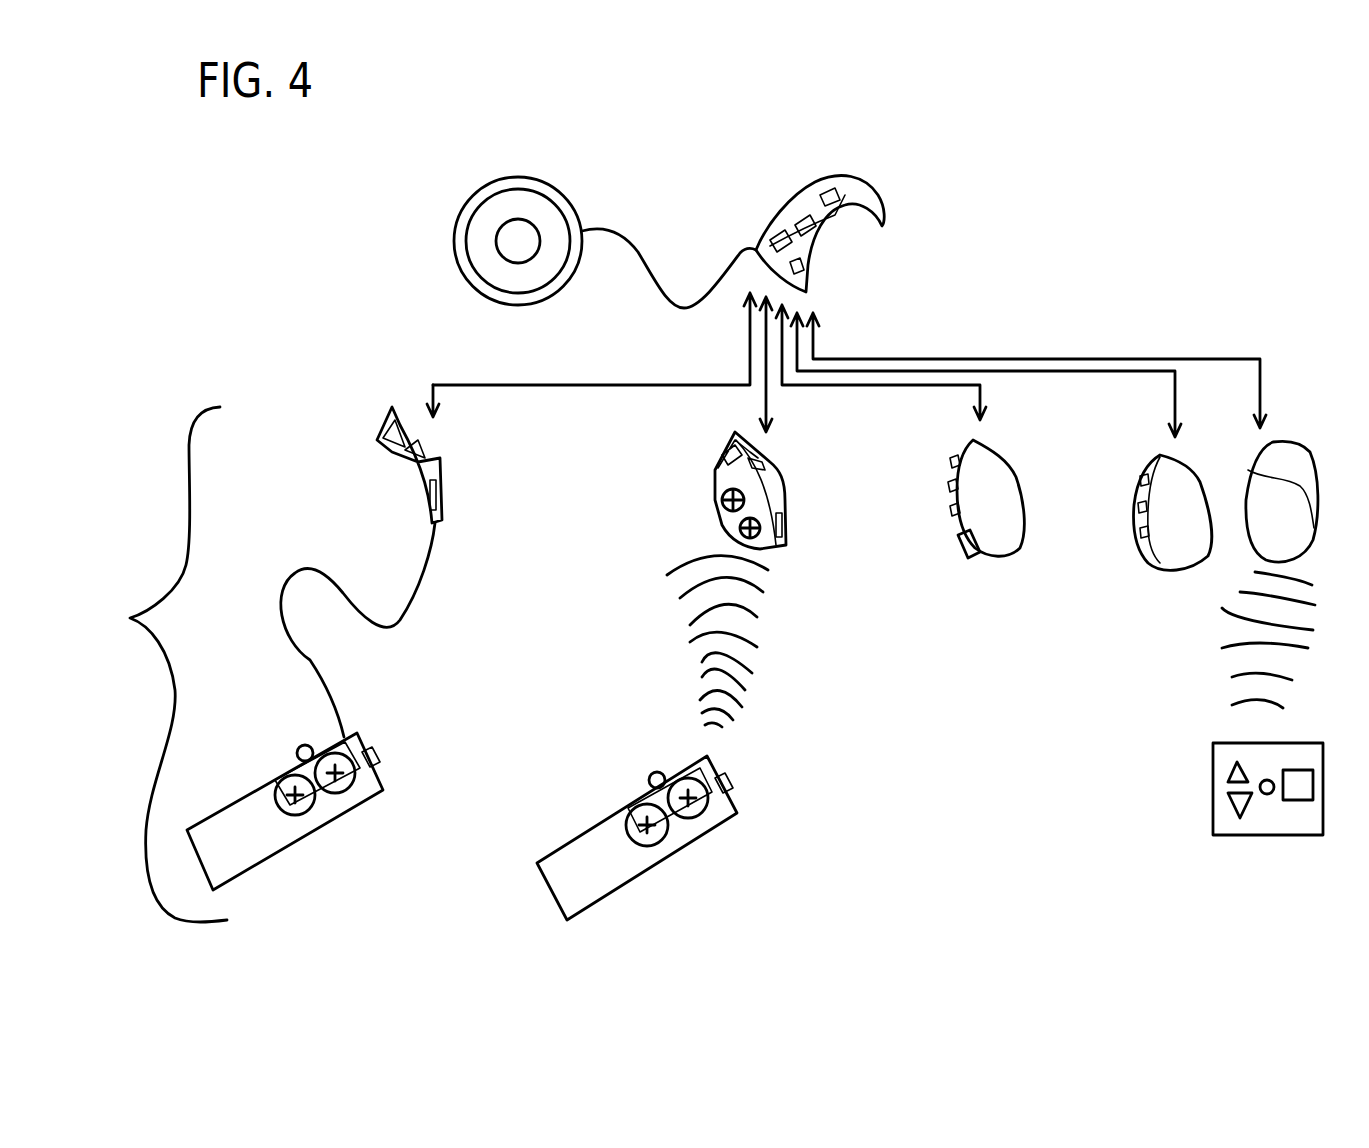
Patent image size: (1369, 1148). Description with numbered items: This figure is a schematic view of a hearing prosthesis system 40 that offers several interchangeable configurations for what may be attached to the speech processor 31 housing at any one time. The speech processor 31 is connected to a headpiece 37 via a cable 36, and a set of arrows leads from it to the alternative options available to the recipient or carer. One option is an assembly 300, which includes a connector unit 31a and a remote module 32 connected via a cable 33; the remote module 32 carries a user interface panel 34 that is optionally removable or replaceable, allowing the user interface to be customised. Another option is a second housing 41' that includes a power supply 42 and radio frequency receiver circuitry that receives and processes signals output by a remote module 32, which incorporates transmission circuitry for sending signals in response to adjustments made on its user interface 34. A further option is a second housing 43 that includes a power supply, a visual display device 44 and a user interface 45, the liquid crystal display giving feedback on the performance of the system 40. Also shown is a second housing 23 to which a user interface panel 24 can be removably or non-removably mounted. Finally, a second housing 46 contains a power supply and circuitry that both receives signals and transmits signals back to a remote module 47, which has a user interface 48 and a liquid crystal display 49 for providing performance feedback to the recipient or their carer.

The headpiece 37 is at (533, 173).
The cable 36 is at (635, 240).
The speech processor 31 is at (790, 200).
The hearing prosthesis system 40 is at (929, 247).
The assembly 300 is at (150, 664).
The connector unit 31a is at (400, 470).
The cable 33 is at (408, 603).
The user interface panel 34 is at (293, 732).
The remote module 32 is at (250, 870).
The second housing 41' is at (784, 490).
The power supply 42 is at (722, 500).
The second housing 43 is at (1000, 468).
The visual display device 44 is at (965, 558).
The user interface 45 is at (925, 494).
The second housing 23 is at (1170, 565).
The user interface panel 24 is at (1132, 518).
The second housing 46 is at (1320, 548).
The remote module 47 is at (1213, 808).
The user interface 48 is at (1226, 760).
The liquid crystal display 49 is at (1298, 800).